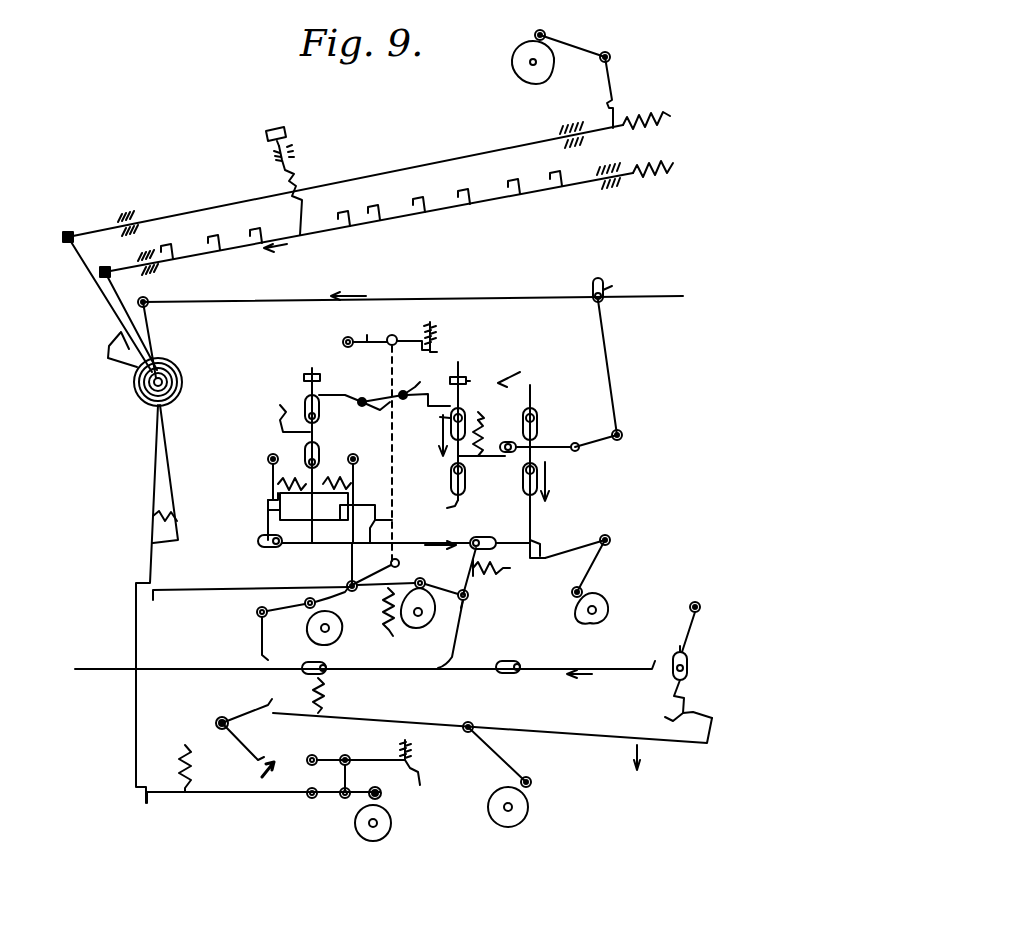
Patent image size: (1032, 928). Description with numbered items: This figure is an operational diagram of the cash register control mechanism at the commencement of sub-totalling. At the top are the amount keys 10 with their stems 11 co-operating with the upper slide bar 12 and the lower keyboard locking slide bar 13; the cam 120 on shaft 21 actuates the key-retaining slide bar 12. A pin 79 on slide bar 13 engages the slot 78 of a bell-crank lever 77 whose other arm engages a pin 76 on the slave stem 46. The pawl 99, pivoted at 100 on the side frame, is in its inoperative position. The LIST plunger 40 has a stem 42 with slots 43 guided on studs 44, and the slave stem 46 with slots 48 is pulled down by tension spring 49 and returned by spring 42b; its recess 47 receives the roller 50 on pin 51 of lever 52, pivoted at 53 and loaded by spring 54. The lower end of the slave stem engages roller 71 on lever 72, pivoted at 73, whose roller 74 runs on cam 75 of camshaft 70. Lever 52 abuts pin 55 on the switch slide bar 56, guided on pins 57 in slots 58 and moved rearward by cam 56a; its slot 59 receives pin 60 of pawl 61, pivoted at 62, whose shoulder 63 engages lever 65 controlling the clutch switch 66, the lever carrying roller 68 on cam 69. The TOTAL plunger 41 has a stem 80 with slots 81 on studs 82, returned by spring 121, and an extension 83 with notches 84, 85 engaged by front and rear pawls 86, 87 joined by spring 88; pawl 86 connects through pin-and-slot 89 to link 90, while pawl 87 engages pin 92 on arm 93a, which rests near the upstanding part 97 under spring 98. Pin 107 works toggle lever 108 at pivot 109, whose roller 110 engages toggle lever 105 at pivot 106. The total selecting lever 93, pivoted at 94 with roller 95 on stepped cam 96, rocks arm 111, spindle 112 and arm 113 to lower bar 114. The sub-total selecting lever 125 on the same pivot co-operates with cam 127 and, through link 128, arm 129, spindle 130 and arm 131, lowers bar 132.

The press-down amount keys 10 is at (276, 127).
The key stems 11 is at (296, 165).
The upper slide bar 12 is at (480, 154).
The lower slide bar 13 is at (542, 191).
The shaft 21 is at (527, 62).
The cam 120 is at (521, 76).
The slot 78 is at (598, 278).
The pin 79 is at (612, 286).
The bell-crank lever 77 is at (610, 352).
The pin 76 is at (580, 450).
The pivot 100 is at (148, 386).
The pawl 99 is at (152, 476).
The spindle 112 is at (344, 337).
The arm 113 is at (380, 337).
The bar 114 is at (437, 348).
The TOTAL plunger 41 is at (310, 372).
The stem 80 is at (306, 402).
The elongated slots 81 is at (320, 412).
The spring 121 is at (280, 407).
The studs 82 is at (306, 462).
The front notch 84 is at (278, 486).
The rear notch 85 is at (308, 510).
The front locking pawl 86 is at (266, 516).
The pin-and-slot connection 89 is at (258, 543).
The extension 83 is at (308, 548).
The upstanding part 97 is at (336, 564).
The arm 93a is at (375, 563).
The tension spring 88 is at (335, 471).
The pin 92 is at (362, 508).
The rear locking pawl 87 is at (377, 510).
The link 90 is at (408, 538).
The pin 107 is at (332, 390).
The second toggle lever 108 is at (375, 382).
The pivot 109 is at (376, 393).
The roller 110 is at (376, 416).
The toggle lever 105 is at (416, 378).
The pivot 106 is at (420, 418).
The LIST plunger 40 is at (458, 372).
The stem 42 is at (468, 388).
The studs 44 is at (466, 410).
The elongated slots 43 is at (442, 458).
The tension spring 49 is at (489, 437).
The spring 42b is at (498, 409).
The elongated slots 48 is at (537, 418).
The roller 50 is at (540, 446).
The slave stem 46 is at (535, 512).
The pin 51 is at (482, 536).
The recess 47 is at (528, 538).
The roller 71 is at (548, 550).
The lever 72 is at (590, 546).
The pivot 73 is at (610, 539).
The roller 74 is at (582, 590).
The cam 75 is at (597, 622).
The camshaft 70 is at (597, 610).
The slide bar 56 is at (652, 674).
The elongated slots 58 is at (302, 675).
The pins 57 is at (328, 678).
The pin 55 is at (442, 663).
The cam 56a is at (309, 636).
The pin 60 is at (688, 663).
The pawl 61 is at (692, 630).
The pivot 62 is at (696, 602).
The slot 59 is at (680, 652).
The shoulder 63 is at (665, 717).
The lever 65 is at (582, 728).
The clutch switch 66 is at (248, 712).
The roller 68 is at (532, 778).
The cam 69 is at (530, 804).
The total selecting lever 93 is at (255, 599).
The pivot 94 is at (302, 620).
The arm 111 is at (368, 612).
The spring 98 is at (402, 628).
The roller 95 is at (433, 590).
The stepped cam 96 is at (407, 590).
The lever 52 is at (470, 592).
The pivot 53 is at (466, 612).
The spring 54 is at (504, 570).
The sub-total selecting lever 125 is at (232, 798).
The spindle 130 is at (308, 755).
The arm 131 is at (366, 760).
The link 128 is at (348, 772).
The bar 132 is at (424, 764).
The cam 127 is at (385, 814).
The arm 129 is at (360, 830).